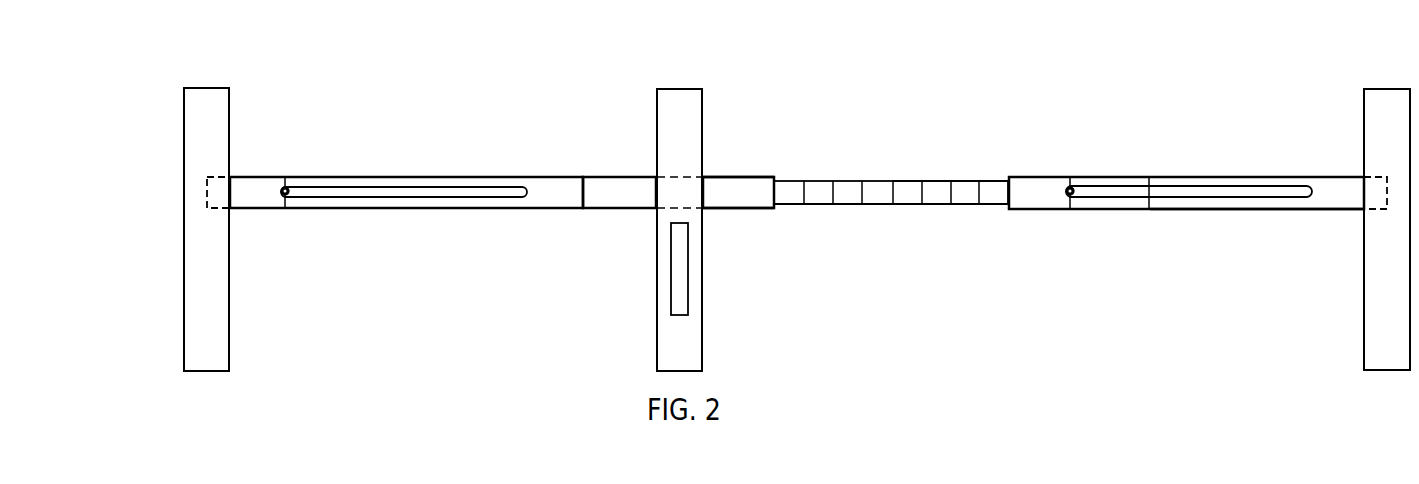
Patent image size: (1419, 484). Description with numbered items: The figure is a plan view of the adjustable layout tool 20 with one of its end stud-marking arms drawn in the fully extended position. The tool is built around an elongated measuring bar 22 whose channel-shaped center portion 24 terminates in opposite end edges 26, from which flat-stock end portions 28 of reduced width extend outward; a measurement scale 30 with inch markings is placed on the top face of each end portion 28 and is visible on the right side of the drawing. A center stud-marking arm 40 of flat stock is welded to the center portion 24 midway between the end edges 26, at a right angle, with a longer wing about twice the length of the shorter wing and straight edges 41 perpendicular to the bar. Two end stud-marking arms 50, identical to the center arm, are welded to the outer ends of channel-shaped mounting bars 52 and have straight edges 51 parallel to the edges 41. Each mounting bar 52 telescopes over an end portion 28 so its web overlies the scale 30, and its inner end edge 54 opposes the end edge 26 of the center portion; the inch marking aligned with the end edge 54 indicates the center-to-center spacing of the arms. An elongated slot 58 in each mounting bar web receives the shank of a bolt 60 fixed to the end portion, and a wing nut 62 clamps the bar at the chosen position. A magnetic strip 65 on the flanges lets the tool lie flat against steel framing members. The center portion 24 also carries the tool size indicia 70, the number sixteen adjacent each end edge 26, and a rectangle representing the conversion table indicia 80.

The adjustable layout tool 20 is at (887, 78).
The measuring bar 22 is at (717, 174).
The center portion 24 is at (643, 176).
The end edges 26 is at (776, 190).
The end portions 28 is at (812, 188).
The measurement scale 30 is at (893, 183).
The center stud-marking arm 40 is at (677, 89).
The straight edges 41 is at (657, 330).
The end stud-marking arms 50 is at (207, 88).
The straight edges 51 is at (186, 121).
The mounting bars 52 is at (556, 188).
The end edges 54 is at (1008, 206).
The elongated slot 58 is at (375, 193).
The bolts 60 is at (286, 178).
The wing nuts 62 is at (285, 208).
The magnetic strip 65 is at (1205, 210).
The tool size indicia 70 is at (758, 210).
The conversion table indicia 80 is at (671, 268).